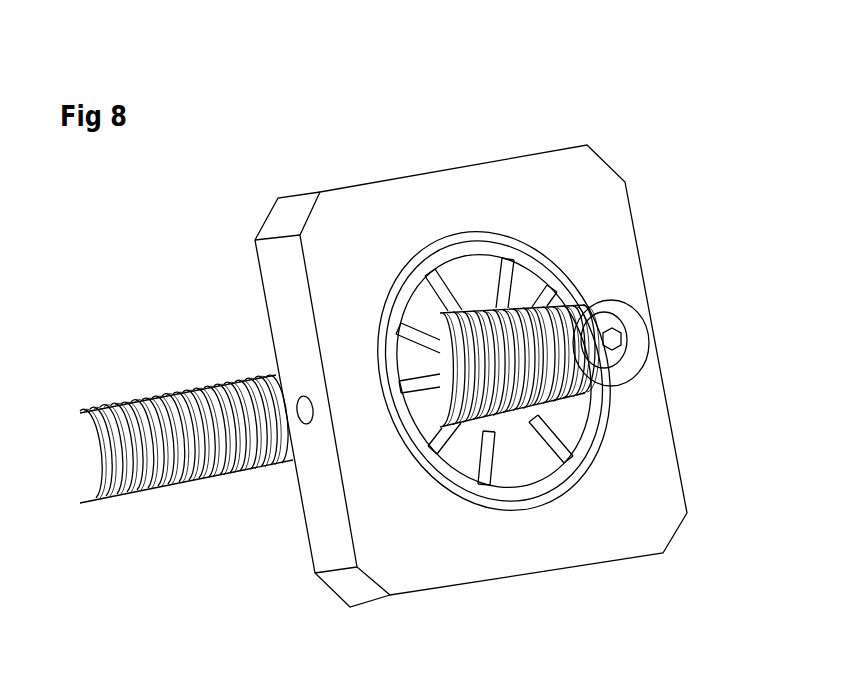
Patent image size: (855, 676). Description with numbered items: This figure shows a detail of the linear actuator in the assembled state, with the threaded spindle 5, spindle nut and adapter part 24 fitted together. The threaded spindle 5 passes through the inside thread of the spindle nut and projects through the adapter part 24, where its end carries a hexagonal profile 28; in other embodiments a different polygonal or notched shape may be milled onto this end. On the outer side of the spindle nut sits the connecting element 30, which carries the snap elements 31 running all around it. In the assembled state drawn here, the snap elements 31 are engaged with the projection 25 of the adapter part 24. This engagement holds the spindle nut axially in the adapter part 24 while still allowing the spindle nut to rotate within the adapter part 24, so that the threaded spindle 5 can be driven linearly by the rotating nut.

The threaded spindle 5 is at (210, 358).
The adapter part 24 is at (627, 192).
The projection 25 is at (532, 507).
The hexagonal profile 28 is at (633, 327).
The connecting element 30 is at (472, 288).
The snap elements 31 is at (526, 258).